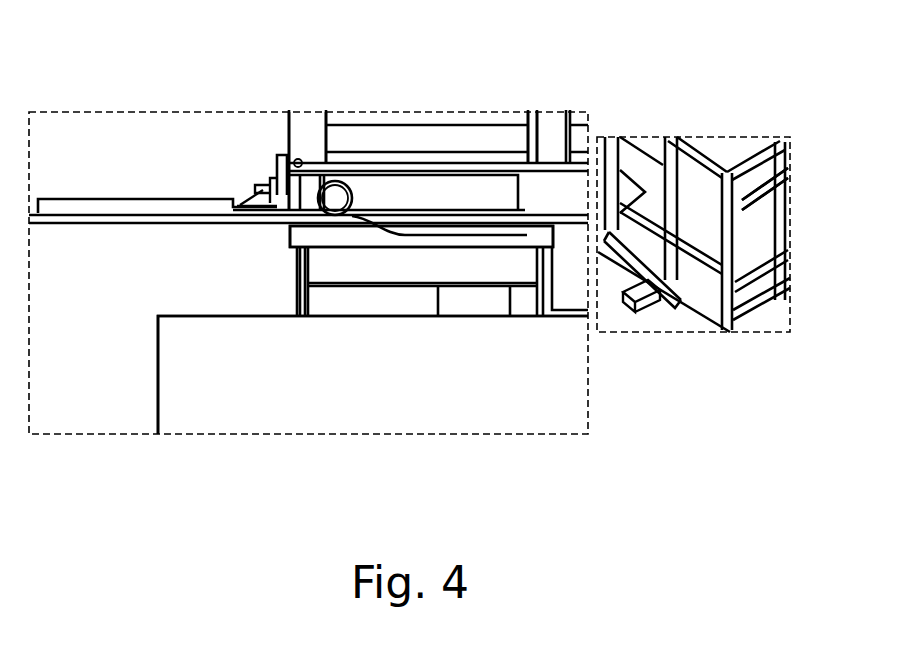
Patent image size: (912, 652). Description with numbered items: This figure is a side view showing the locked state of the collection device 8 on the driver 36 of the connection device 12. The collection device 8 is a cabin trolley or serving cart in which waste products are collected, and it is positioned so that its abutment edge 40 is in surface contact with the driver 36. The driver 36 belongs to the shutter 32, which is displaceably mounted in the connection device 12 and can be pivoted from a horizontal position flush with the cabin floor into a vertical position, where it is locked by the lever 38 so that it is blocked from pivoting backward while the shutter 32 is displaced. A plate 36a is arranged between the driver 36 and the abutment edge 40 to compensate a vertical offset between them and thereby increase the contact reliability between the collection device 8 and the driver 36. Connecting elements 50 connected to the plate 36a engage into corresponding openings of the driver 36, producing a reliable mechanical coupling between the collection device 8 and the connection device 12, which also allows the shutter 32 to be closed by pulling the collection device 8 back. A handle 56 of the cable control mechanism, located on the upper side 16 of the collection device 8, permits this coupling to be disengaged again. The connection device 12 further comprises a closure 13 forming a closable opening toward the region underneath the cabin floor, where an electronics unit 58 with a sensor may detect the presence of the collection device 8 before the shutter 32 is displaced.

The collection device 8 is at (550, 127).
The connection device 12 is at (268, 272).
The closure 13 is at (365, 298).
The upper end 16 is at (725, 136).
The shutter 32 is at (157, 203).
The driver 36 is at (268, 207).
The plate 36a is at (268, 178).
The lever 38 is at (255, 183).
The abutment edge 40 is at (300, 138).
The connecting elements 50 is at (250, 197).
The handle 56 is at (790, 162).
The electronics unit 58 is at (651, 303).